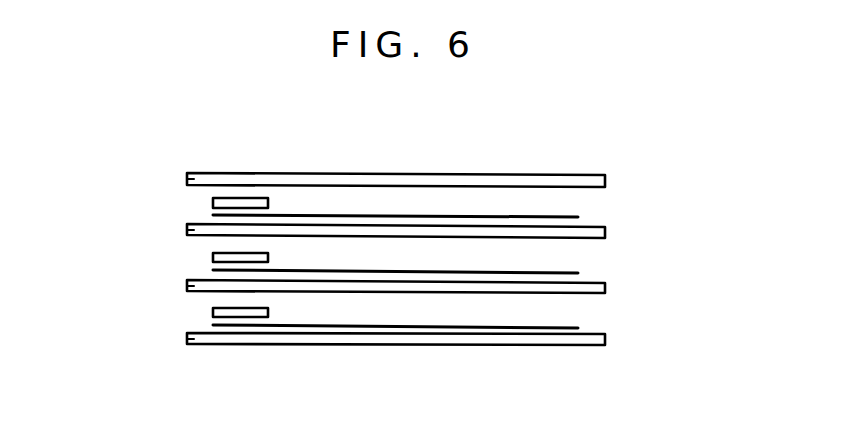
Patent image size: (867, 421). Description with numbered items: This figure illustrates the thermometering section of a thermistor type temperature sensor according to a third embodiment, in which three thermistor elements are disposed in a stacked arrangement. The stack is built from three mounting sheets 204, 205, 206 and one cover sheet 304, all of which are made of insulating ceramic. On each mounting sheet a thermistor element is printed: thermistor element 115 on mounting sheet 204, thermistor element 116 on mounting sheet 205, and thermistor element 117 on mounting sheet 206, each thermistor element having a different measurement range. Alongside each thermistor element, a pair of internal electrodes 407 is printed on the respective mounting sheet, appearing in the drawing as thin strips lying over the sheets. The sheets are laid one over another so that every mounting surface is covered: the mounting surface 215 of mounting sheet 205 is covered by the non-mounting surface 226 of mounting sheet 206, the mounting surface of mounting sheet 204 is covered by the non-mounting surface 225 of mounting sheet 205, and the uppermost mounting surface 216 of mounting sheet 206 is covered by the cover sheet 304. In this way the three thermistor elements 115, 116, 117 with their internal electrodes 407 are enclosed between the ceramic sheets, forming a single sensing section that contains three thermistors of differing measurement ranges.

The cover sheet 304 is at (187, 178).
The mounting sheet 206 is at (187, 230).
The mounting sheet 205 is at (187, 286).
The mounting sheet 204 is at (187, 340).
The thermistor element 117 is at (213, 203).
The thermistor element 116 is at (213, 258).
The thermistor element 115 is at (213, 313).
The internal electrodes 407 is at (347, 217).
The non-mounting surface 226 is at (509, 236).
The mounting surface 216 is at (591, 228).
The mounting surface 215 is at (591, 282).
The non-mounting surface 225 is at (585, 294).